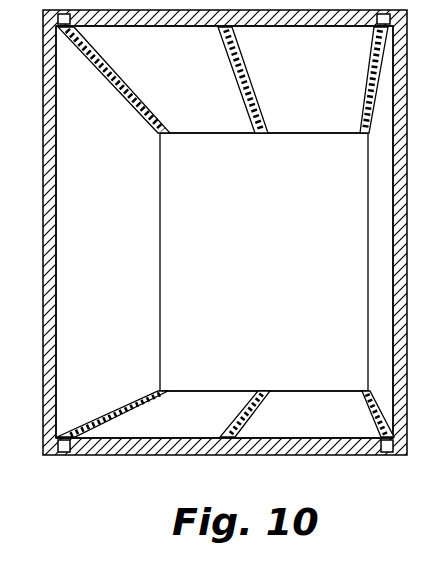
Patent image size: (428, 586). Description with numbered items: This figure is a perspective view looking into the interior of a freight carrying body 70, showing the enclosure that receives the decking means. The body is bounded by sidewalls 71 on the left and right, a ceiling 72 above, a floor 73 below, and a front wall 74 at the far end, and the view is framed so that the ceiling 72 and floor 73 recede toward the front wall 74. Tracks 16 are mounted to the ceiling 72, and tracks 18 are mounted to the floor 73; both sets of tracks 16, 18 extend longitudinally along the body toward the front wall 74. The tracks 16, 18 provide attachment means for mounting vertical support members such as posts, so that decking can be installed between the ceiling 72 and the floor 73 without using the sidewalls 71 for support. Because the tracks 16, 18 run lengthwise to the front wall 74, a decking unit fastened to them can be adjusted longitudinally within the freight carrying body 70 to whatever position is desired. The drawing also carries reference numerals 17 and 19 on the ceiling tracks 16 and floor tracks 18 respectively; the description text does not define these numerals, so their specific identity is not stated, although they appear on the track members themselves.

The freight carrying body 70 is at (38, 318).
The sidewalls 71 is at (116, 264).
The ceiling 72 is at (212, 98).
The floor 73 is at (310, 419).
The front wall 74 is at (272, 221).
The tracks 16 is at (96, 52).
The strut rungs 17 is at (110, 74).
The tracks 18 is at (106, 431).
The strut rungs 19 is at (130, 408).